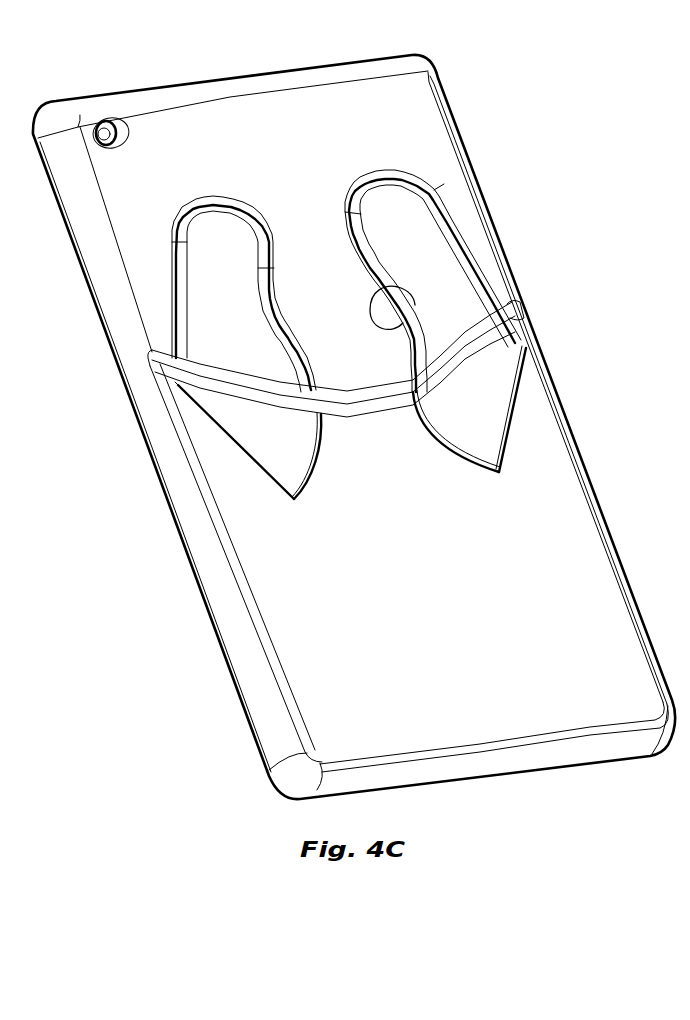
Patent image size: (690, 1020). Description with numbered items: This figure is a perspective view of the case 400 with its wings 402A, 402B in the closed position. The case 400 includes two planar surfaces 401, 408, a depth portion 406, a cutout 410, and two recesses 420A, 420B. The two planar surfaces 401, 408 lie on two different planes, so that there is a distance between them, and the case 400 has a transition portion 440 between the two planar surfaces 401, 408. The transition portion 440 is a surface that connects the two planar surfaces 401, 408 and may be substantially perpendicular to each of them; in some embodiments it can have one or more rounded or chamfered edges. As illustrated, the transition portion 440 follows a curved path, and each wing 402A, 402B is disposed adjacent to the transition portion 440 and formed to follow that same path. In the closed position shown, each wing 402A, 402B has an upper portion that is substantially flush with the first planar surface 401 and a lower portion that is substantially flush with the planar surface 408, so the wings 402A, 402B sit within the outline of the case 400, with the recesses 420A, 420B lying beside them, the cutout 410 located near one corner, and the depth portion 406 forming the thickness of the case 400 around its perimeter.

The case 400 is at (431, 58).
The first planar surface 401 is at (445, 150).
The wing 402A is at (420, 233).
The wing 402B is at (205, 299).
The depth portion 406 is at (598, 746).
The planar surface 408 is at (593, 592).
The cutout 410 is at (97, 125).
The recess 420A is at (403, 322).
The recess 420B is at (242, 268).
The transition portion 440 is at (505, 322).